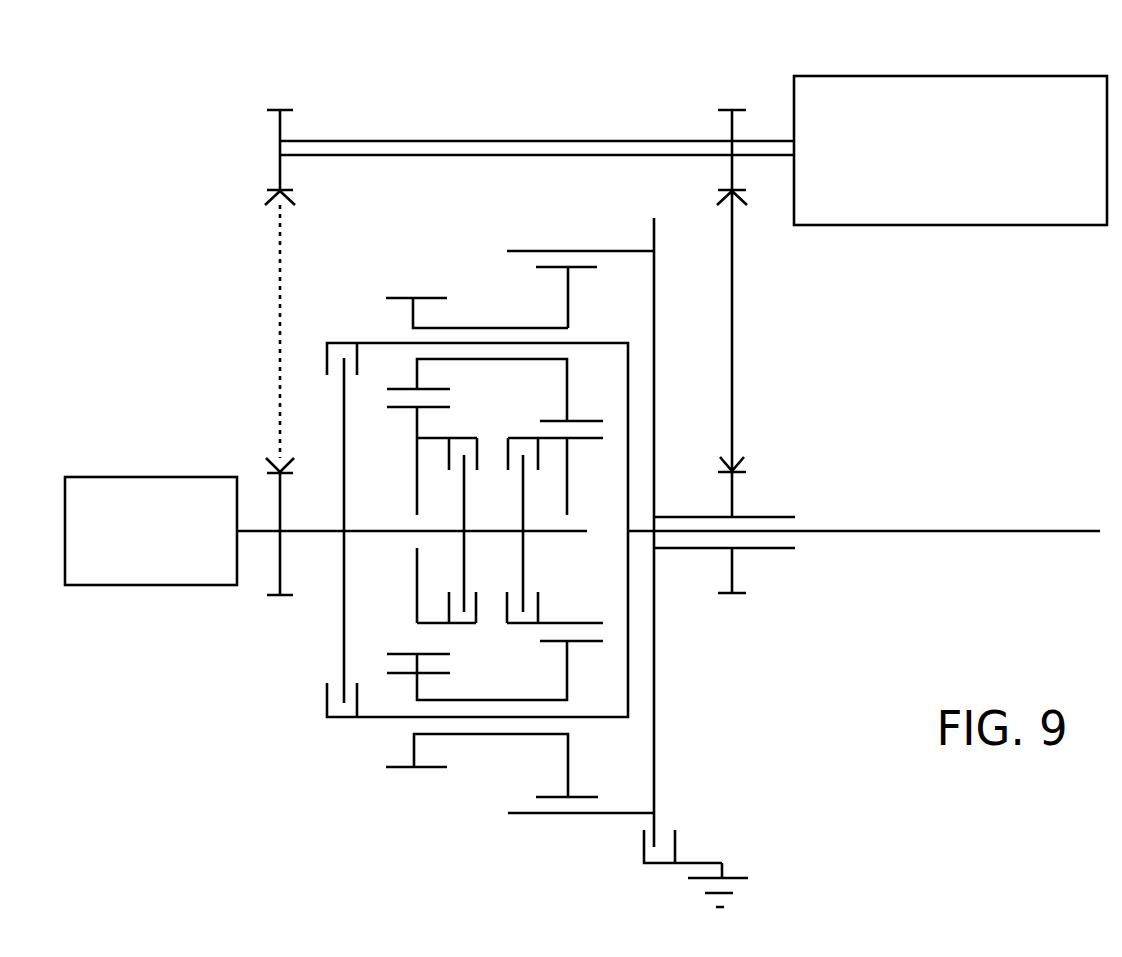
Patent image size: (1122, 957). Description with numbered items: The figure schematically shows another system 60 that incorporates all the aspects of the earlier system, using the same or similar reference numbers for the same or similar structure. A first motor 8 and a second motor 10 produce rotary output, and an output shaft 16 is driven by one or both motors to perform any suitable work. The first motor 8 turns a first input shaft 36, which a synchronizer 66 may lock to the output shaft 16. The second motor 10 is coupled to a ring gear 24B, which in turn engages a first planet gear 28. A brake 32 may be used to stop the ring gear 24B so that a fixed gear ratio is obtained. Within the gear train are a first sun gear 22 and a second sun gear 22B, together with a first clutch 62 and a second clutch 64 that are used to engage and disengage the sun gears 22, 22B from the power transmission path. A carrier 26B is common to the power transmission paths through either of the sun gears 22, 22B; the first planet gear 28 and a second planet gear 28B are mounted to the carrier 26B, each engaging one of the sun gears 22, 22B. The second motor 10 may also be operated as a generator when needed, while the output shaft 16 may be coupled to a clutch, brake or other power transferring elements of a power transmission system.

The first motor 8 is at (140, 497).
The second motor 10 is at (971, 98).
The output shaft 16 is at (886, 531).
The first sun gear 22 is at (567, 592).
The second sun gear 22B is at (415, 603).
The ring gear 24B is at (578, 250).
The carrier 26B is at (628, 412).
The first planet gear 28 is at (568, 305).
The second planet gear 28B is at (413, 316).
The brake 32 is at (675, 840).
The first input shaft 36 is at (250, 528).
The system 60 is at (968, 376).
The first clutch 62 is at (523, 437).
The second clutch 64 is at (460, 623).
The synchronizer 66 is at (344, 717).